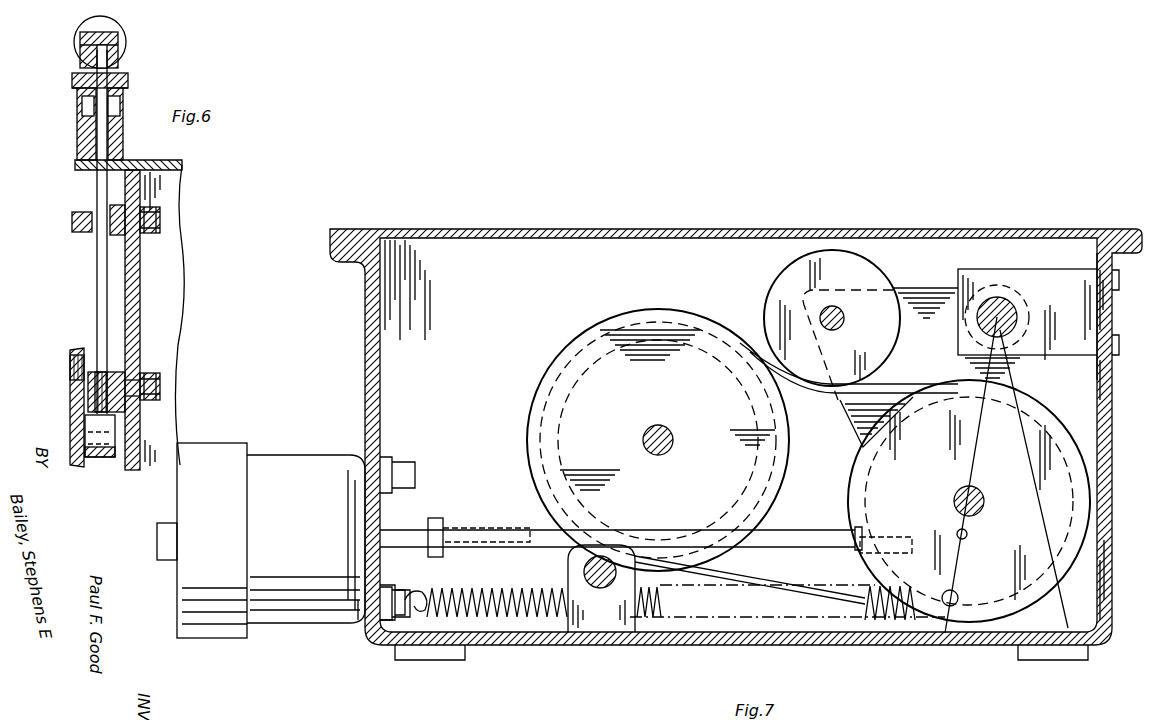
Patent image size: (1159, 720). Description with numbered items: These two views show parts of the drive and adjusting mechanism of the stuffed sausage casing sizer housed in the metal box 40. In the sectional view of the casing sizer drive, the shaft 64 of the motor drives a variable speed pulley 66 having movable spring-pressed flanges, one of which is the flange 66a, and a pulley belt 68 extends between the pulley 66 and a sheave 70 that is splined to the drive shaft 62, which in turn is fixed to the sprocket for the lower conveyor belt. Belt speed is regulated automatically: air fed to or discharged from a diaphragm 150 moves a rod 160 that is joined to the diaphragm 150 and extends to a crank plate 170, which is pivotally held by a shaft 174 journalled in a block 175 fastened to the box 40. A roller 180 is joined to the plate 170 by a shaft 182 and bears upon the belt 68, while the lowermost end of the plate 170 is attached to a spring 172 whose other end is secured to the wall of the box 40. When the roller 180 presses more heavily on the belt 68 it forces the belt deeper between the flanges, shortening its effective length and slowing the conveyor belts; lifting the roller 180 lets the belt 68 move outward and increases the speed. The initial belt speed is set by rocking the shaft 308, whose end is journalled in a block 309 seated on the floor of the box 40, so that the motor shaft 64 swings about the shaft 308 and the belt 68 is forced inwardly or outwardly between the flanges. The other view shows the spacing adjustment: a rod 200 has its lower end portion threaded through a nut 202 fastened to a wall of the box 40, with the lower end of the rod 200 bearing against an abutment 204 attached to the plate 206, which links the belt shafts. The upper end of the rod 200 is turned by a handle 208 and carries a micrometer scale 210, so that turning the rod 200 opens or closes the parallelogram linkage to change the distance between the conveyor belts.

In FIG. 6, the handle 208 is at (80, 35).
In FIG. 6, the micrometer scale 210 is at (72, 116).
In FIG. 6, the rod 200 is at (96, 283).
In FIG. 6, the nut 202 is at (114, 372).
In FIG. 6, the metal box 40 is at (140, 323).
In FIG. 7, the metal box 40 is at (372, 393).
In FIG. 6, the plate 206 is at (70, 404).
In FIG. 6, the abutment 204 is at (96, 457).
In FIG. 7, the diaphragm 150 is at (303, 468).
In FIG. 7, the rod 160 is at (510, 523).
In FIG. 7, the spring 172 is at (496, 590).
In FIG. 7, the block 309 is at (568, 574).
In FIG. 7, the shaft 308 is at (640, 577).
In FIG. 7, the variable speed pulley 66 is at (554, 353).
In FIG. 7, the pulley flange 66a is at (530, 410).
In FIG. 7, the motor shaft 64 is at (650, 427).
In FIG. 7, the pulley belt 68 is at (814, 396).
In FIG. 7, the roller 180 is at (780, 279).
In FIG. 7, the shaft 182 is at (846, 324).
In FIG. 7, the crank plate 170 is at (934, 290).
In FIG. 7, the shaft 174 is at (1005, 300).
In FIG. 7, the block 175 is at (1076, 278).
In FIG. 7, the sheave 70 is at (1080, 382).
In FIG. 7, the drive shaft 62 is at (955, 496).